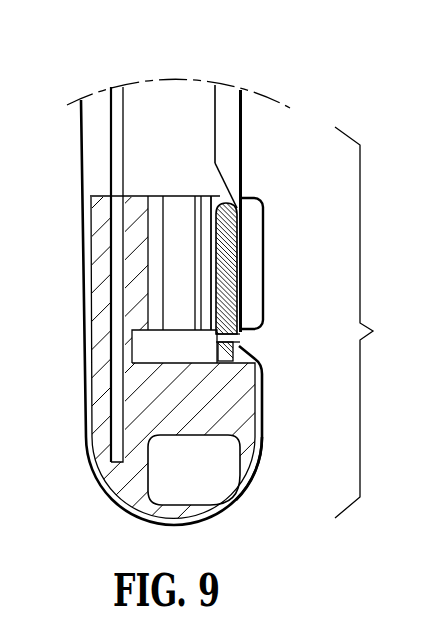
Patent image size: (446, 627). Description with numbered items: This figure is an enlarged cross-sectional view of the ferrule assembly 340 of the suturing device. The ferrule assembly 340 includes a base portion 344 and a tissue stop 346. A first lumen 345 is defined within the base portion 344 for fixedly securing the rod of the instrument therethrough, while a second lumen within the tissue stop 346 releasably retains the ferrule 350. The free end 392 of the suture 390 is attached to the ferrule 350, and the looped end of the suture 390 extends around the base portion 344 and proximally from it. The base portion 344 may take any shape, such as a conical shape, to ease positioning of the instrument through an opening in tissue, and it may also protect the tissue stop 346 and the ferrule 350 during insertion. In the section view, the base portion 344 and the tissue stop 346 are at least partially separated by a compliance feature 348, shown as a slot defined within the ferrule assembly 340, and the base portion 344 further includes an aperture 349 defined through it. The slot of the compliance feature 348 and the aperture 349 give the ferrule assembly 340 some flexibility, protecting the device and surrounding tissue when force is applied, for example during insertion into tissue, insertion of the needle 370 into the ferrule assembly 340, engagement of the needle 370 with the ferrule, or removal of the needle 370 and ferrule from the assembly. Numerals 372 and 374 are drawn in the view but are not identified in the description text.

The ferrule assembly 340 is at (371, 322).
The base portion 344 is at (88, 462).
The first lumen 345 is at (107, 331).
The tissue stop 346 is at (263, 238).
The compliance feature 348 is at (181, 352).
The aperture 349 is at (205, 468).
The ferrule 350 is at (237, 283).
The needle 370 is at (240, 128).
The tapered distal end 372 is at (237, 203).
The cavity 374 is at (217, 182).
The suture 390 is at (241, 486).
The free end 392 is at (240, 346).